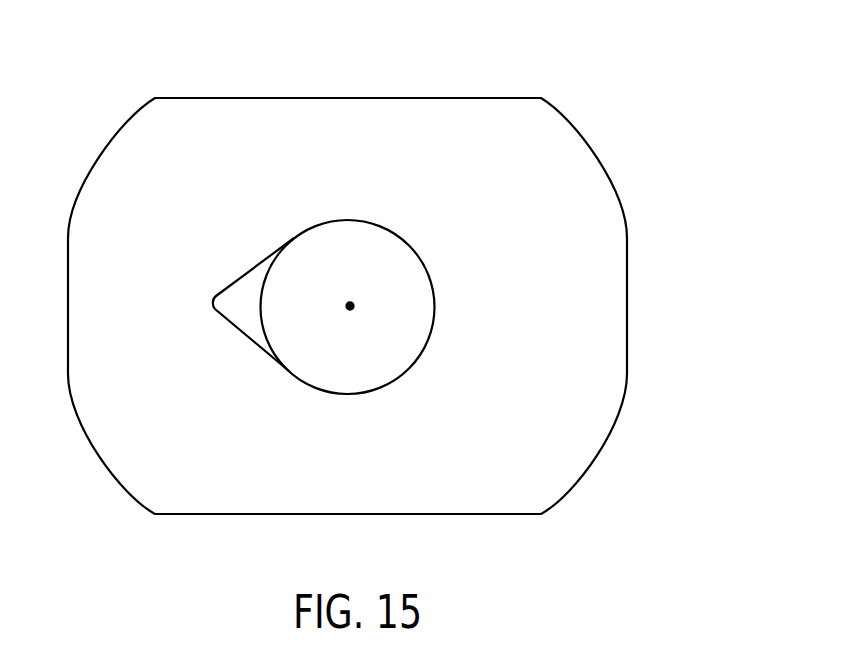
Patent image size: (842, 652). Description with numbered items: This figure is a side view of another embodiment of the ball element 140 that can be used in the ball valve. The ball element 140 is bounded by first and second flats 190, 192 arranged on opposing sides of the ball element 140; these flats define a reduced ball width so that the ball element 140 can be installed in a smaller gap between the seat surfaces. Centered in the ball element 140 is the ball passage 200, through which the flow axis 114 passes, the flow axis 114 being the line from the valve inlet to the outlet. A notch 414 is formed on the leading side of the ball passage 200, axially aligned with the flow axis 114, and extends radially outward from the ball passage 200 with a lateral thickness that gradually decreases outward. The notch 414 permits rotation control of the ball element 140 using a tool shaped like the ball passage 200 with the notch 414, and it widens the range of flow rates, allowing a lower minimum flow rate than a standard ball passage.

The ball element 140 is at (132, 462).
The first flat 190 is at (450, 98).
The second flat 192 is at (432, 514).
The ball passage 200 is at (315, 385).
The flow axis 114 is at (352, 300).
The notch 414 is at (218, 293).